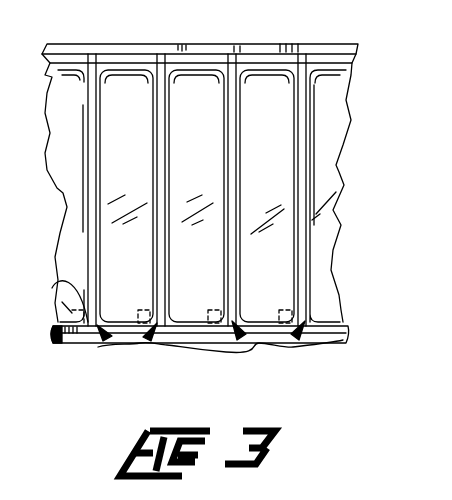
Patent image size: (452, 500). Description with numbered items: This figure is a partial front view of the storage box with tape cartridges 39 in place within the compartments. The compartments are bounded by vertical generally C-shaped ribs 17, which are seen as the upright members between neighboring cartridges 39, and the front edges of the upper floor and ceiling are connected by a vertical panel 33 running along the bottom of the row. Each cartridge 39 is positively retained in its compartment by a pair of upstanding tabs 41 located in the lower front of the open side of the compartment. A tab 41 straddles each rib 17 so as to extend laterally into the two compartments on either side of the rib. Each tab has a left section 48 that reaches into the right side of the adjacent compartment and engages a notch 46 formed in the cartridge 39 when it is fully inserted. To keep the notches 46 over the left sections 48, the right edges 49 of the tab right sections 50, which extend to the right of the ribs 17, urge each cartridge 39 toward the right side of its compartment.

The vertical generally C-shaped ribs 17 is at (100, 63).
The vertical panel 33 is at (86, 346).
The tape cartridge 39 is at (57, 121).
The upstanding tabs 41 is at (106, 341).
The notches 46 is at (44, 300).
The tab left section 48 is at (149, 313).
The tab right edges 49 is at (112, 321).
The tab right sections 50 is at (344, 284).